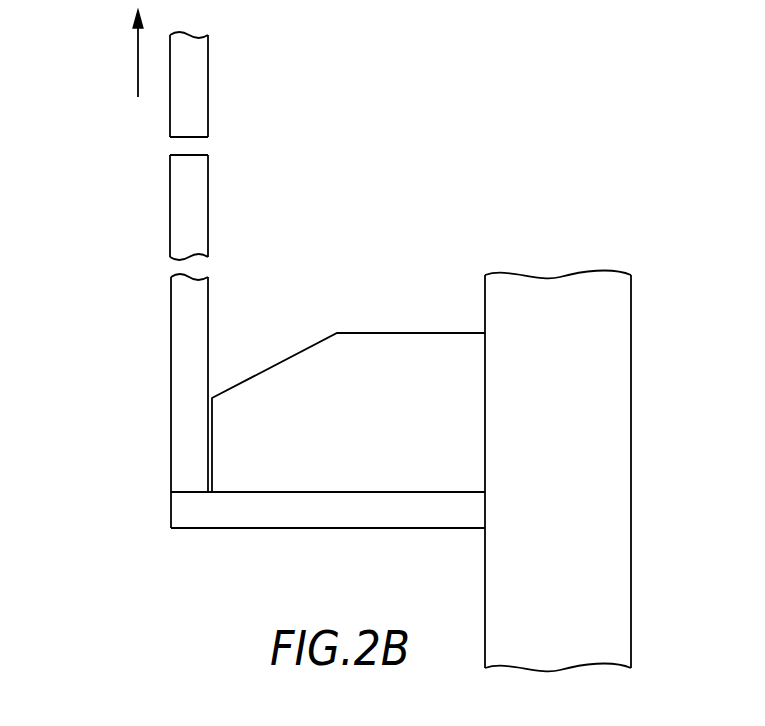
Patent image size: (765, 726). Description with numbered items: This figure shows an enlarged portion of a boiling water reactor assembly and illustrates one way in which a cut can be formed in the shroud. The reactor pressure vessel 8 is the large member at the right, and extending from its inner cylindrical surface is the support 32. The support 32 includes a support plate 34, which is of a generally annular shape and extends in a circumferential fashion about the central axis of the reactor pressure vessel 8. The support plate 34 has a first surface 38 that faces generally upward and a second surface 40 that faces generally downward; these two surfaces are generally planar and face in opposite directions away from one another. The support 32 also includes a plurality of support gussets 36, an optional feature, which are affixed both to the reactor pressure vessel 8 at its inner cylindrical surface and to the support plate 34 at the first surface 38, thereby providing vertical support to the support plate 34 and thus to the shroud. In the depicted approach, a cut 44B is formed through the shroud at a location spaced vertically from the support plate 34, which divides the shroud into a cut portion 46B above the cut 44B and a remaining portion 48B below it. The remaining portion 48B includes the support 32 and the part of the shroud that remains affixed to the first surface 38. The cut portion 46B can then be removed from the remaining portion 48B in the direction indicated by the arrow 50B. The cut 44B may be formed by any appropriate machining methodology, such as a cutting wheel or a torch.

The reactor pressure vessel 8 is at (631, 363).
The support 32 is at (328, 437).
The support plate 34 is at (325, 528).
The support gussets 36 is at (300, 355).
The first surface 38 is at (370, 492).
The second surface 40 is at (425, 528).
The cut 44B is at (178, 146).
The cut portion 46B is at (208, 93).
The remaining portion 48B is at (218, 192).
The arrow 50B is at (136, 70).